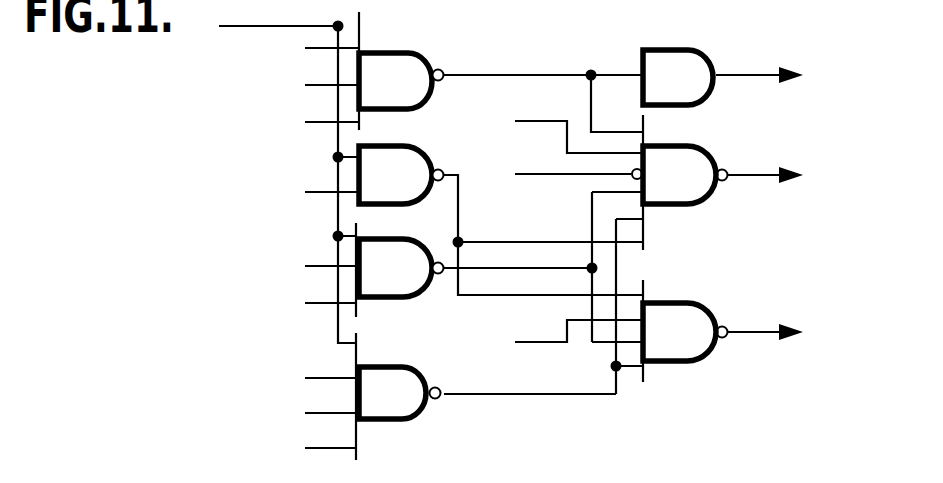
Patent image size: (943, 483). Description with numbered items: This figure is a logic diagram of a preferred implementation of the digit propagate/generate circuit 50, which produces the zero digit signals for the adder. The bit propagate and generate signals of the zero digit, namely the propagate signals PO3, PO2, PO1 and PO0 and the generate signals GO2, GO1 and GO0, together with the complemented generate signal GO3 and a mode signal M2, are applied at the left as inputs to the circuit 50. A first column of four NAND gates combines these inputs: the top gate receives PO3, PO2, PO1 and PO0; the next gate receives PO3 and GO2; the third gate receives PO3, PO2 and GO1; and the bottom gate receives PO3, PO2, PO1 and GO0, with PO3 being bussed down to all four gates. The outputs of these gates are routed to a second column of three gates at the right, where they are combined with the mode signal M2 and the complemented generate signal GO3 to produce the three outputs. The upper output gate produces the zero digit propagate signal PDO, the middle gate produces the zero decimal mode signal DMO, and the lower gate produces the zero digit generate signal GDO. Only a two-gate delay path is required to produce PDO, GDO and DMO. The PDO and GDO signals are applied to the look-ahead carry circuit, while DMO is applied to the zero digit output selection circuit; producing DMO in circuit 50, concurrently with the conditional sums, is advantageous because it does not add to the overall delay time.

The digit propagate/generate circuit 50 is at (729, 35).
The propagate signal P0_3 PO3 is at (263, 29).
The propagate signal P0_2 PO2 is at (317, 216).
The propagate signal P0_1 PO1 is at (317, 252).
The propagate signal P0_0 PO0 is at (317, 125).
The generate signal G0_2 GO2 is at (317, 195).
The generate signal G0_1 GO1 is at (315, 306).
The generate signal G0_0 GO0 is at (315, 451).
The generate signal G0_3 GO3 is at (525, 346).
The mode signal M2 is at (563, 128).
The zero digit propagate signal PD0 PDO is at (786, 80).
The zero decimal mode signal DM0 DMO is at (790, 178).
The zero digit generate signal GD0 GDO is at (788, 334).